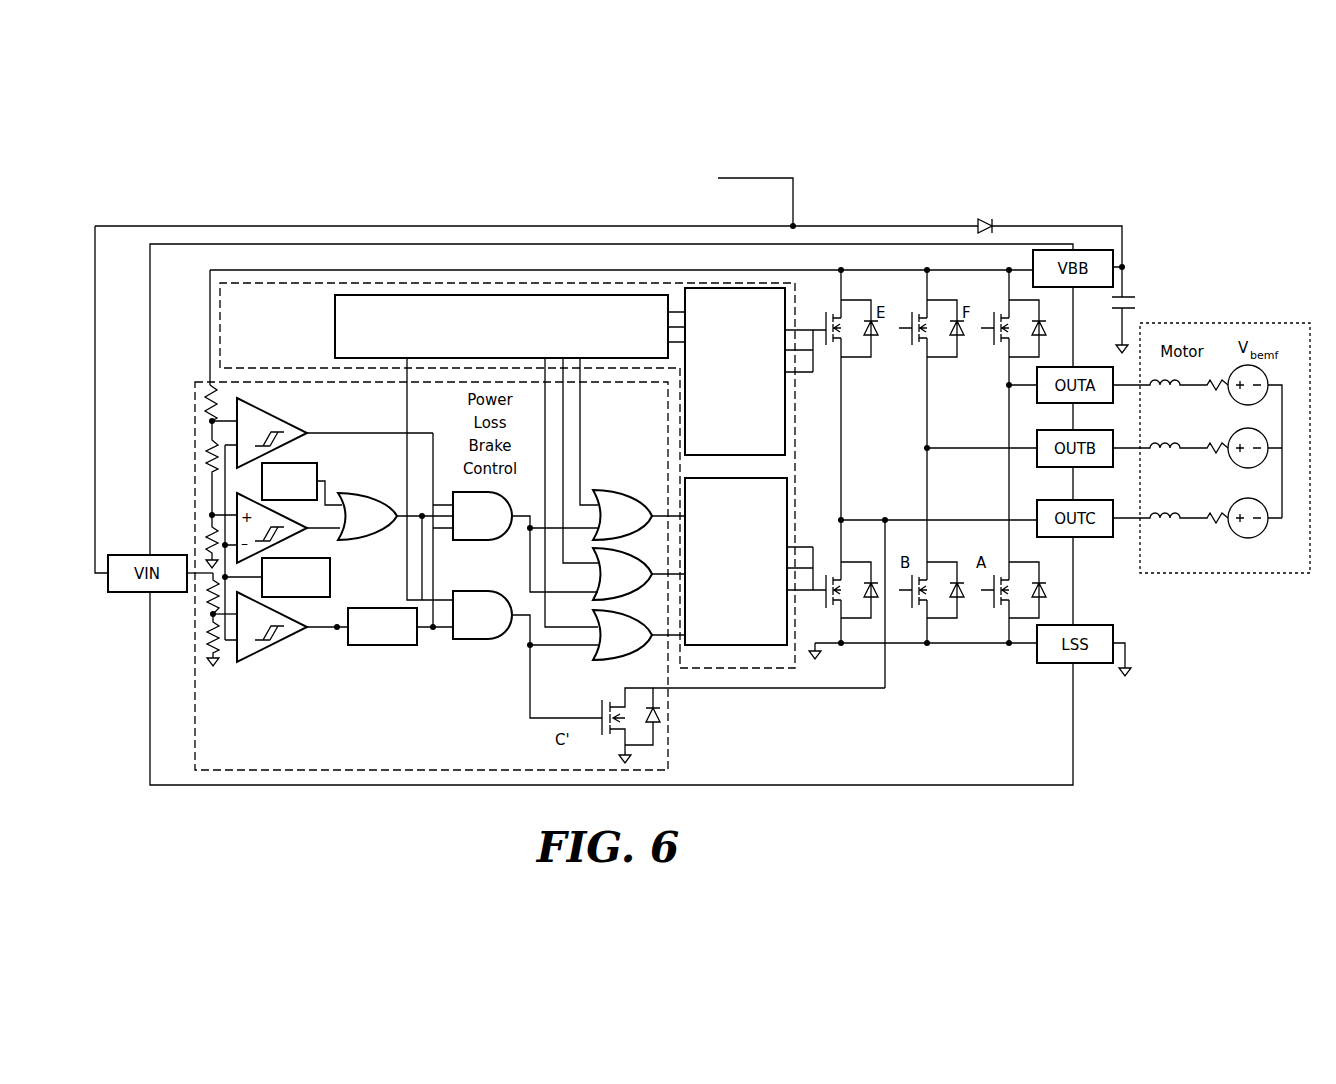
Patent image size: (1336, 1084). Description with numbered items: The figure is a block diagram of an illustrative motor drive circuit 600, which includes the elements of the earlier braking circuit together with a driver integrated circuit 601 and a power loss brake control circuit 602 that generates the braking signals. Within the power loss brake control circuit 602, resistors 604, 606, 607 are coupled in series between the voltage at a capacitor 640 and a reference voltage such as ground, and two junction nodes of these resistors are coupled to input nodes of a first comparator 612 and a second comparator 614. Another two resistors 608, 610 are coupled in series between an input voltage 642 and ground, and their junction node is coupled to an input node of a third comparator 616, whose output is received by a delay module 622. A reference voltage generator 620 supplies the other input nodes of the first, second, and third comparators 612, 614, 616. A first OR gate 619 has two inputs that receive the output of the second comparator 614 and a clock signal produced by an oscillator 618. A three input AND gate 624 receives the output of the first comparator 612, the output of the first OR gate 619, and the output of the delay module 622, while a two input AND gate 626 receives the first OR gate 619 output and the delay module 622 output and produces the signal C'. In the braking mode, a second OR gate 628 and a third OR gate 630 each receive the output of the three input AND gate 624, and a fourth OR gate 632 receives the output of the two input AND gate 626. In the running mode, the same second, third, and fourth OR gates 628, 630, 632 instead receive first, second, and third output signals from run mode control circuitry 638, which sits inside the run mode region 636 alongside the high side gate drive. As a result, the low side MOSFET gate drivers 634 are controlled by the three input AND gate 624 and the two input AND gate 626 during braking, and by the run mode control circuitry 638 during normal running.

The motor drive circuit 600 is at (1074, 186).
The driver IC 601 is at (430, 244).
The power loss brake control circuit 602 is at (198, 760).
The resistor 604 is at (208, 398).
The resistor 606 is at (210, 462).
The resistor 607 is at (208, 544).
The resistor 608 is at (210, 592).
The resistor 610 is at (210, 640).
The first comparator 612 is at (283, 425).
The second comparator 614 is at (212, 528).
The third comparator 616 is at (270, 650).
The oscillator 618 is at (320, 479).
The first OR gate 619 is at (395, 546).
The reference voltage generator 620 is at (330, 580).
The delay module 622 is at (385, 646).
The three input AND gate 624 is at (525, 542).
The two input AND gate 626 is at (527, 654).
The second OR gate 628 is at (639, 515).
The third OR gate 630 is at (639, 574).
The fourth OR gate 632 is at (639, 635).
The low side MOSFET gate drivers 634 is at (755, 561).
The run mode circuitry region 636 is at (283, 283).
The run mode control circuitry 638 is at (510, 461).
The capacitor 640 is at (1194, 230).
The input voltage 642 is at (770, 178).